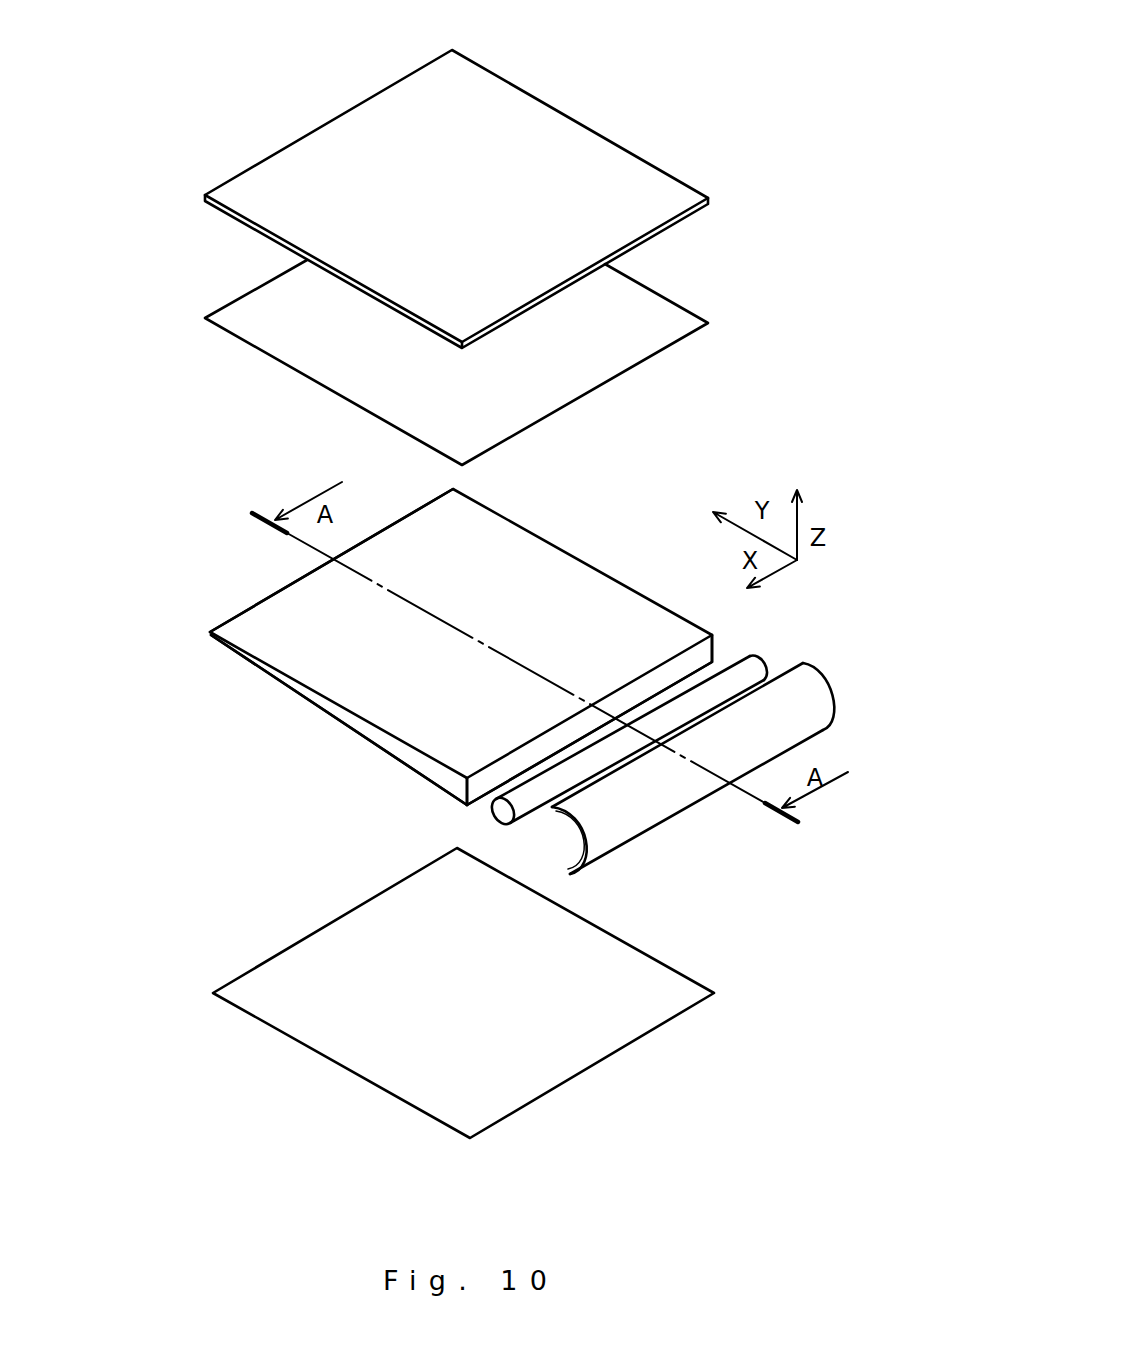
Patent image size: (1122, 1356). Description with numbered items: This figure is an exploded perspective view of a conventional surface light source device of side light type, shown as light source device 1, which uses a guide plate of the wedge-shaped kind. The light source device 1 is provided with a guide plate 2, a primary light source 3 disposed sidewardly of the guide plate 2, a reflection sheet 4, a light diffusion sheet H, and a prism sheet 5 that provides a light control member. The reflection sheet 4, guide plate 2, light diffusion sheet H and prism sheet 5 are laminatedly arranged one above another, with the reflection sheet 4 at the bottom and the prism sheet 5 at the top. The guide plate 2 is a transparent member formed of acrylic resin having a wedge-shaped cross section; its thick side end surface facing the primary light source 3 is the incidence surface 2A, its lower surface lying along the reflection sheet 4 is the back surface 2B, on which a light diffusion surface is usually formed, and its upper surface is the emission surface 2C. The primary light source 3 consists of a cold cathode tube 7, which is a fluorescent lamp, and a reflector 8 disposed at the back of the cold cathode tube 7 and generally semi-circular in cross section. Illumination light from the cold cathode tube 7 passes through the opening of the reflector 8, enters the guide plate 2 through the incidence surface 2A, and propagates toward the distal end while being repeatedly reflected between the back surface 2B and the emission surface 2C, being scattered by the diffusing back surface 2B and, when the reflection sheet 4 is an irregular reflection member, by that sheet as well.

The light source device 1 is at (243, 1131).
The guide plate 2 is at (252, 630).
The incidence surface 2A is at (645, 687).
The back surface 2B is at (288, 722).
The emission surface 2C is at (290, 608).
The primary light source 3 is at (602, 716).
The reflection sheet 4 is at (513, 1107).
The prism sheet 5 is at (642, 220).
The cold cathode tube 7 is at (496, 813).
The reflector 8 is at (690, 790).
The light diffusion sheet H is at (627, 352).